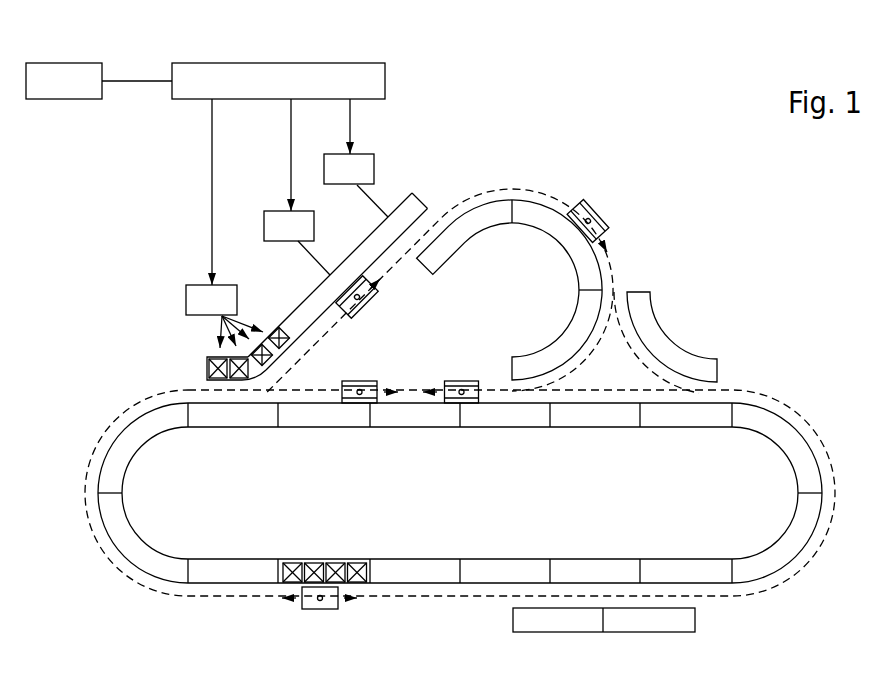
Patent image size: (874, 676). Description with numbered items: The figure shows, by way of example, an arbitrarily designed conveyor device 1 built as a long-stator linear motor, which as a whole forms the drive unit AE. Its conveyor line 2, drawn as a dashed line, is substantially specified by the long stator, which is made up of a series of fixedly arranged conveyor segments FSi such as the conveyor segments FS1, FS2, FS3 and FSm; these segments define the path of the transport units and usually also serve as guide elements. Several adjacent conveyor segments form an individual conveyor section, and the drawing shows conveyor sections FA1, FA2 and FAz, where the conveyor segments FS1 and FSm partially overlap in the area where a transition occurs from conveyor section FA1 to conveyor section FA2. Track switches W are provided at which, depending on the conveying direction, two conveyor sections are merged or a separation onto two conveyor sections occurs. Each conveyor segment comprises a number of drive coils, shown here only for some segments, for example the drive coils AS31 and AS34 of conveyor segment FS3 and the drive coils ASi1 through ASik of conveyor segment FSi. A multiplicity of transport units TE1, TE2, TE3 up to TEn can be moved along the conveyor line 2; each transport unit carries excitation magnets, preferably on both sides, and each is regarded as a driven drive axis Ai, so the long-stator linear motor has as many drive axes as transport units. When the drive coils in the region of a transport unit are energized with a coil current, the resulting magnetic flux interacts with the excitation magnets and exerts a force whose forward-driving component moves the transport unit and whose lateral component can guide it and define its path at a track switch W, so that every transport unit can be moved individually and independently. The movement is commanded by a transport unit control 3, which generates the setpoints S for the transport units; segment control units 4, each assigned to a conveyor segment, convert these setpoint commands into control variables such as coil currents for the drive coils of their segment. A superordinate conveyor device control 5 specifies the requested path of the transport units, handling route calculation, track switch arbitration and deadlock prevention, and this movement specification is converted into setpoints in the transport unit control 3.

The conveyor device 1 is at (243, 622).
The conveyor line 2 is at (800, 420).
The transport unit control 3 is at (282, 92).
The segment control unit 4 is at (374, 166).
The superordinate conveyor device control 5 is at (72, 92).
The setpoints S is at (272, 192).
The conveyor section FA1 is at (195, 237).
The conveyor section FA2 is at (637, 220).
The conveyor section FAz is at (95, 580).
The conveyor segment FS1 is at (420, 203).
The conveyor segment FS2 is at (313, 288).
The conveyor segment FS3 is at (207, 360).
The conveyor segment FSm is at (497, 200).
The conveyor segment FSi is at (332, 563).
The drive coil AS31 is at (207, 377).
The drive coil AS34 is at (277, 325).
The drive coil ASi1 is at (293, 565).
The drive coil ASik is at (355, 563).
The transport unit TE1 is at (585, 206).
The transport unit TE2 is at (381, 312).
The transport unit TE3 is at (447, 405).
The transport unit TEn is at (310, 610).
The track switch W is at (625, 280).
The drive unit AE is at (728, 308).
The drive axis Ai is at (335, 618).